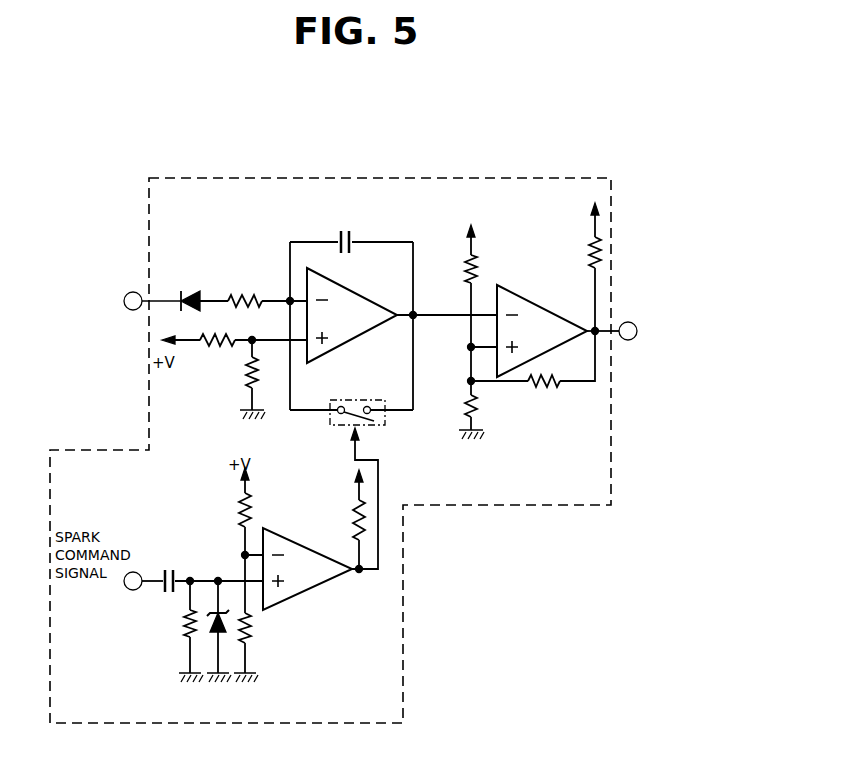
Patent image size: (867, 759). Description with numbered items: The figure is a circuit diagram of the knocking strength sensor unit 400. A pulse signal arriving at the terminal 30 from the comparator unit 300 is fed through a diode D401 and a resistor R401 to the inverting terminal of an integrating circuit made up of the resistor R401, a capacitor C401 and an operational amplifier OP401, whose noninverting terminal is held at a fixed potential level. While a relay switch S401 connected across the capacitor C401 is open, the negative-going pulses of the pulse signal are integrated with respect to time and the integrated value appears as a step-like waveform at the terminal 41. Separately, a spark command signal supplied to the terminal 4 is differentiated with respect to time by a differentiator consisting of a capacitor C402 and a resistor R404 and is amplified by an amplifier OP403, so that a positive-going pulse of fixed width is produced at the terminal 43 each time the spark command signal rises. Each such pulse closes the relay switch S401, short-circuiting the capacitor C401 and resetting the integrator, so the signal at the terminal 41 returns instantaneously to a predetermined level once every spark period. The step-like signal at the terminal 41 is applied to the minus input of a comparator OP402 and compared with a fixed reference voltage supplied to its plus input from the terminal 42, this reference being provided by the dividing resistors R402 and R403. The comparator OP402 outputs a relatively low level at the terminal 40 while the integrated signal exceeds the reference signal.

The knocking strength sensor unit 400 is at (318, 177).
The comparator unit 300 is at (81, 262).
The terminal 30 is at (128, 310).
The diode D401 is at (189, 290).
The resistor R401 is at (243, 290).
The capacitor C401 is at (344, 229).
The relay switch S401 is at (385, 427).
The operational amplifier OP401 is at (359, 356).
The terminal 41 is at (438, 317).
The dividing resistor R403 is at (466, 262).
The terminal 42 is at (468, 349).
The dividing resistor R402 is at (475, 398).
The comparator OP402 is at (545, 308).
The terminal 40 is at (637, 336).
The terminal 4 is at (129, 590).
The capacitor C402 is at (174, 568).
The resistor R404 is at (187, 628).
The amplifier OP403 is at (300, 595).
The terminal 43 is at (361, 574).